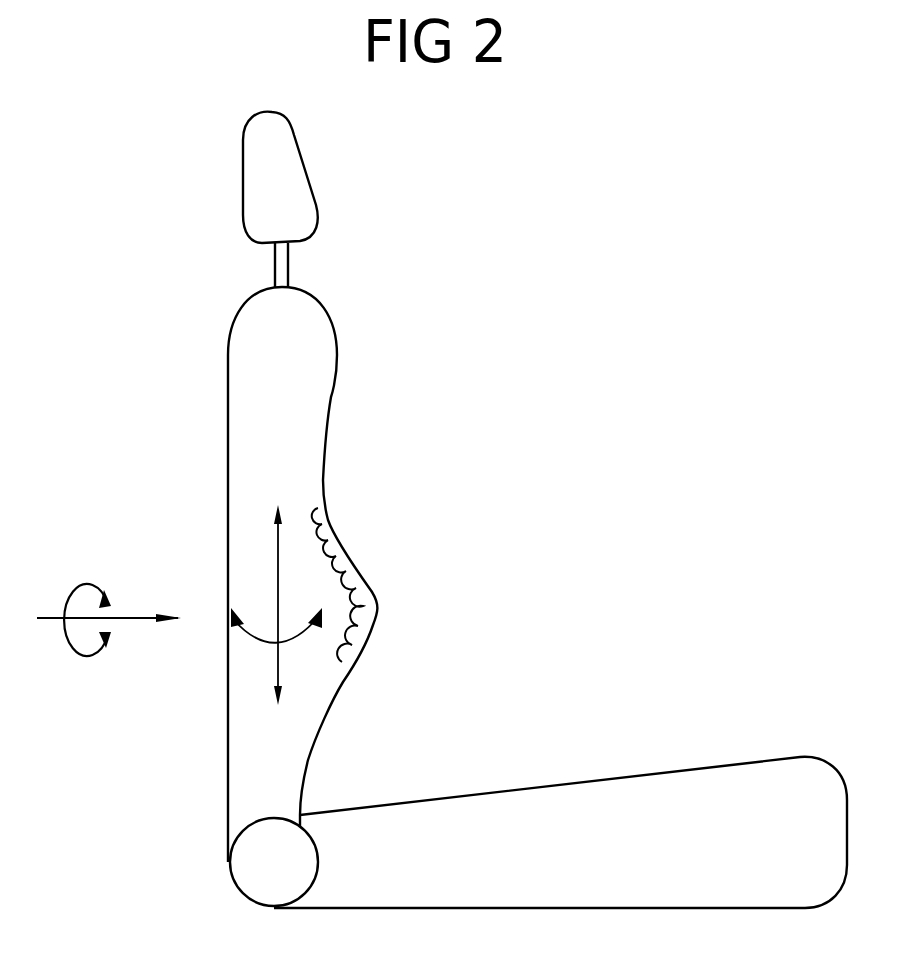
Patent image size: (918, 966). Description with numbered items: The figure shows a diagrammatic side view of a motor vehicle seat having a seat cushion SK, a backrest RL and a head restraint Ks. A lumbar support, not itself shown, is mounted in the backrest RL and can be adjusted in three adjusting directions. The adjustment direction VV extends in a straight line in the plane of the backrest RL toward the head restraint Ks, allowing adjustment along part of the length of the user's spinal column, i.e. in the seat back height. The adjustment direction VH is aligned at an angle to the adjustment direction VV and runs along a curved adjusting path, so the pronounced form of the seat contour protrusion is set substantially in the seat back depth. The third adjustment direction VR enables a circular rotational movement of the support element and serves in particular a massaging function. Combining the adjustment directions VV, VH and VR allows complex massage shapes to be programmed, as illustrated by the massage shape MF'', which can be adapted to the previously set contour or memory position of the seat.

The head restraint Ks is at (297, 203).
The backrest RL is at (260, 460).
The adjustment direction VV is at (278, 568).
The massage shape MF'' is at (391, 585).
The adjustment direction VH is at (300, 640).
The adjustment direction VR is at (82, 587).
The seat cushion SK is at (666, 807).